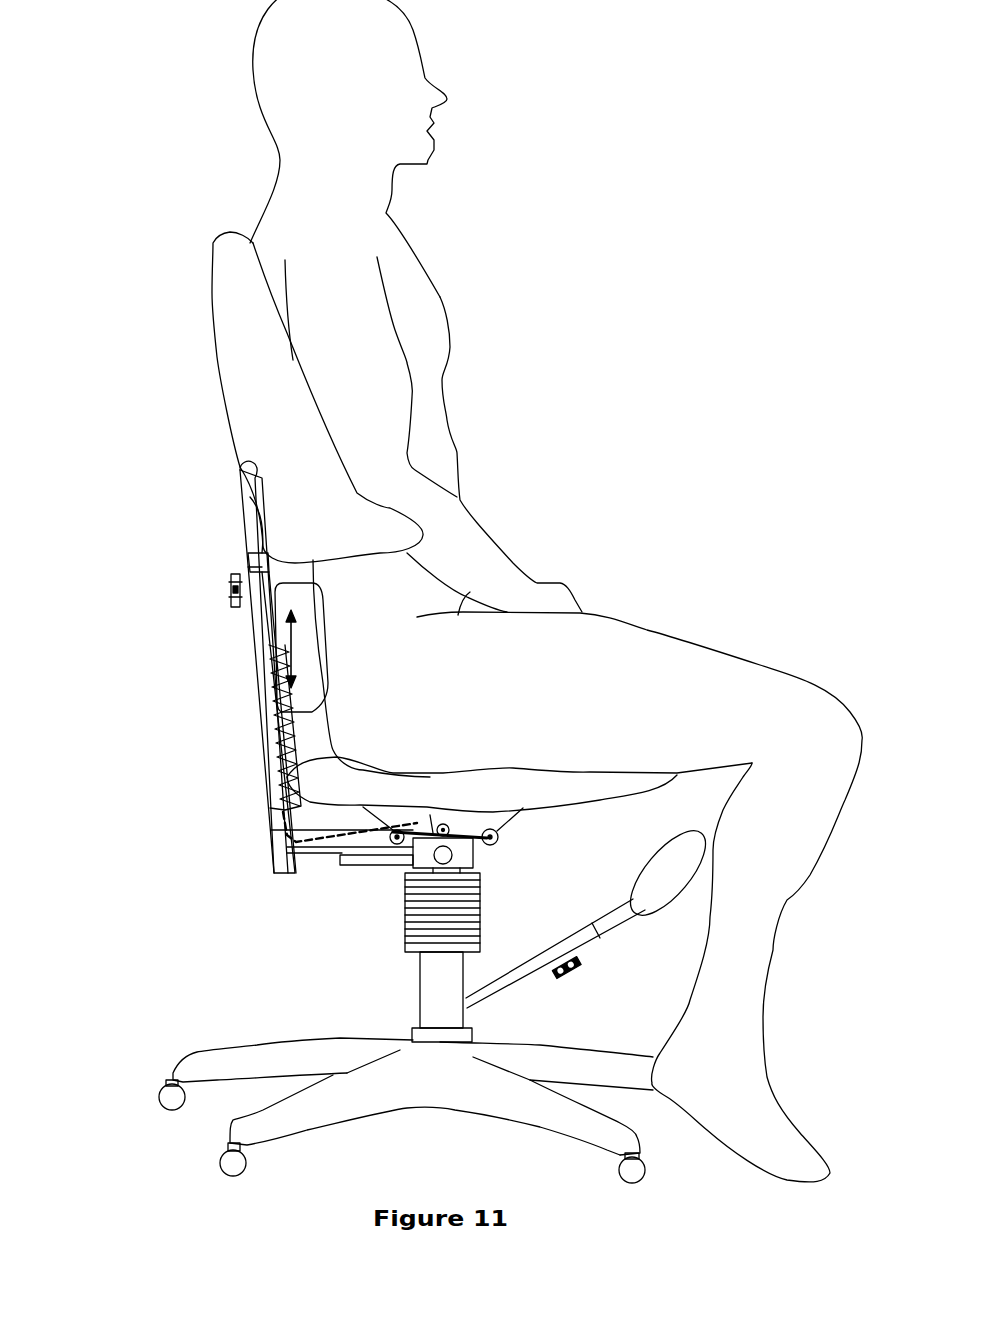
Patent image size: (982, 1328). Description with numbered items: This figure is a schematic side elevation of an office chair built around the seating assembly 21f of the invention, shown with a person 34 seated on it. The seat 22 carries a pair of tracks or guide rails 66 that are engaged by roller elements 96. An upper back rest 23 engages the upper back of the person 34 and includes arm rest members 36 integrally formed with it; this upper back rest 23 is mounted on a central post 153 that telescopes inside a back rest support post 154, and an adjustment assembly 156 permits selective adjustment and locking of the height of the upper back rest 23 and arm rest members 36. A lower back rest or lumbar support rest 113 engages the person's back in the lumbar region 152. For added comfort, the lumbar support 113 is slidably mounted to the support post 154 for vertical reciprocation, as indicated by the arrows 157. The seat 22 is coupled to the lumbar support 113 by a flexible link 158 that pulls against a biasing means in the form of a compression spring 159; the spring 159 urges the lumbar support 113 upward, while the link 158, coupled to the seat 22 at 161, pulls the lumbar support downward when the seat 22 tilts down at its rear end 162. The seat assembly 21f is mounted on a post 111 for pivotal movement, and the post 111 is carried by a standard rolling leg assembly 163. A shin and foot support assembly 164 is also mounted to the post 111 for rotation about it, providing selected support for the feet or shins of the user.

The seating assembly 21f is at (182, 640).
The seat 22 is at (560, 792).
The upper back rest 23 is at (240, 362).
The person 34 is at (420, 325).
The arm rest members 36 is at (383, 508).
The tracks or guide rails 66 is at (515, 818).
The roller elements 96 is at (492, 848).
The post 111 is at (442, 983).
The lower back rest (lumbar support rest) 113 is at (312, 675).
The lumbar region 152 is at (277, 638).
The central post 153 is at (243, 524).
The back rest support post 154 is at (266, 762).
The adjustment assembly 156 is at (230, 590).
The arrows 157 is at (297, 650).
The flexible link 158 is at (270, 809).
The compression spring 159 is at (262, 717).
The coupling point of link to seat 161 is at (473, 815).
The rear end of seat 162 is at (372, 788).
The rolling leg assembly 163 is at (410, 1092).
The shin and foot support assembly 164 is at (690, 888).